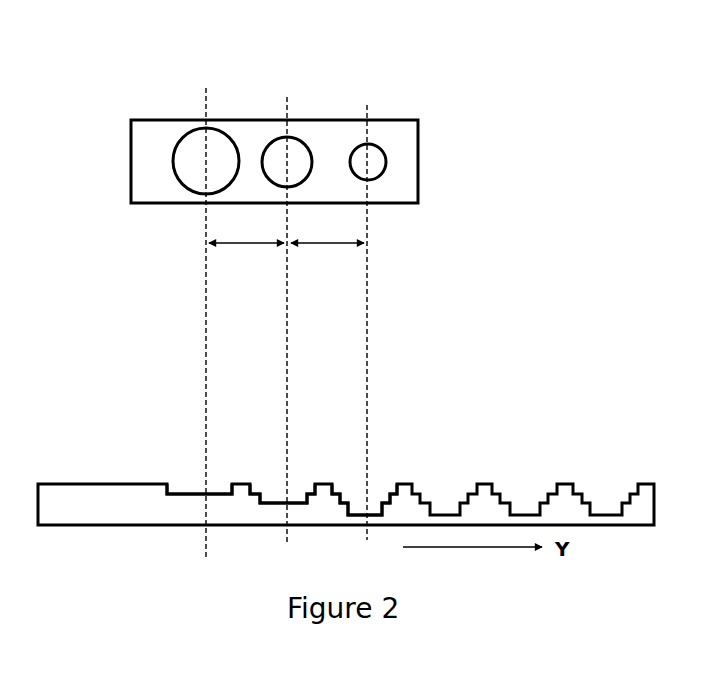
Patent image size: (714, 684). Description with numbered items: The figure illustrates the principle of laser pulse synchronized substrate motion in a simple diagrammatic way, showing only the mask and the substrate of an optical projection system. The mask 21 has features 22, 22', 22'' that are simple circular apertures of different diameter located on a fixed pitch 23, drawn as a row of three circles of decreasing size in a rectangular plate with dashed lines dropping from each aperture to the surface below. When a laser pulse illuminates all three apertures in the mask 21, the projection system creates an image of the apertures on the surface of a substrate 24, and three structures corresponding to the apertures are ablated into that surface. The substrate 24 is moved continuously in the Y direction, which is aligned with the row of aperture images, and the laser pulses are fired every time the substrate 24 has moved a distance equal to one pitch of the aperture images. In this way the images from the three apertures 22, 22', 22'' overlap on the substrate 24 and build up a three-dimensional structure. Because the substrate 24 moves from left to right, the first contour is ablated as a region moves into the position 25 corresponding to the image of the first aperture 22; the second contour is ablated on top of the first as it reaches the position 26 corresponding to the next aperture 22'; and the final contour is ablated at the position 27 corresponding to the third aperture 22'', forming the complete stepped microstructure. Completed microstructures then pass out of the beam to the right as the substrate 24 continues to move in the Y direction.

The mask 21 is at (424, 142).
The first aperture 22 is at (198, 110).
The second aperture 22' is at (303, 107).
The third aperture 22'' is at (412, 103).
The pitch 23 is at (336, 254).
The substrate 24 is at (110, 480).
The position corresponding to the image of the first aperture 25 is at (193, 488).
The position corresponding to the second aperture 26 is at (291, 498).
The position corresponding to the third aperture 27 is at (371, 510).